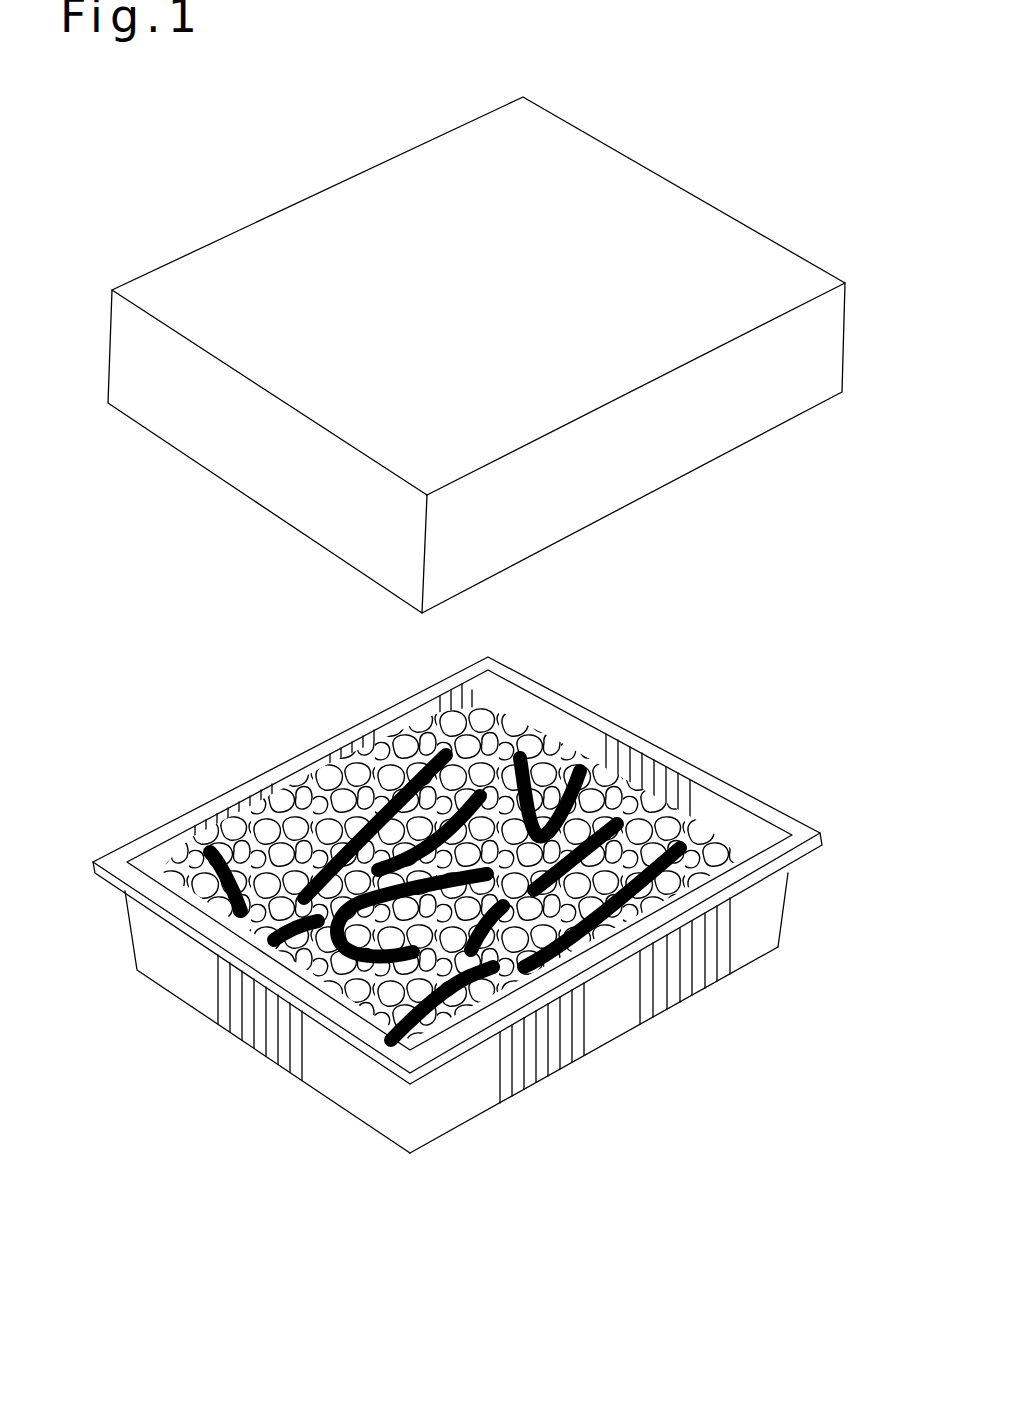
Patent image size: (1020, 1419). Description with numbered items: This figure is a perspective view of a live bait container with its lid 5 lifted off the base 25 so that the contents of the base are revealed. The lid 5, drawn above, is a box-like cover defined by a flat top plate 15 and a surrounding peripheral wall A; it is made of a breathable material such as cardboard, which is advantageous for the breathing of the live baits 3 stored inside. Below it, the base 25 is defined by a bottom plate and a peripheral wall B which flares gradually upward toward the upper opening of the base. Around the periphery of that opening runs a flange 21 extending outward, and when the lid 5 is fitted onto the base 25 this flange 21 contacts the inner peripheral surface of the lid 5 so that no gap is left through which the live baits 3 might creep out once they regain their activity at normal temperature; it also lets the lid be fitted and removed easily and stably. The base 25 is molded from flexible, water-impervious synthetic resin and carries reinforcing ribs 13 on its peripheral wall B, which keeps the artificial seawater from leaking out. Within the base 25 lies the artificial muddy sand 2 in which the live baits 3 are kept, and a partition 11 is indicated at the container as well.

The lid 5 is at (513, 355).
The top plate 15 is at (201, 278).
The peripheral wall A is at (816, 373).
The partition 11 is at (470, 943).
The flange 21 is at (598, 720).
The peripheral wall B is at (760, 940).
The base 25 is at (437, 1122).
The reinforcing ribs 13 is at (183, 985).
The artificial muddy sand 2 is at (277, 843).
The live bait 3 is at (378, 757).